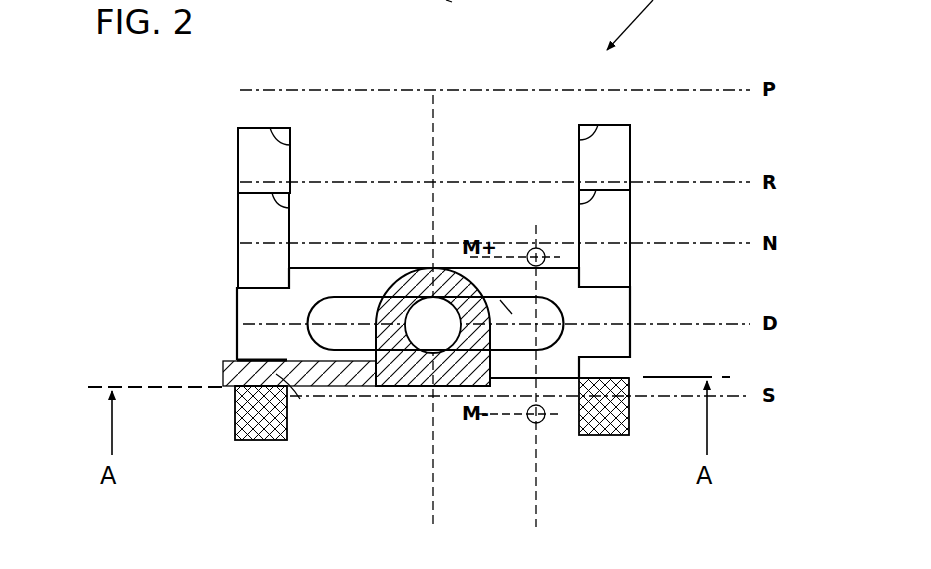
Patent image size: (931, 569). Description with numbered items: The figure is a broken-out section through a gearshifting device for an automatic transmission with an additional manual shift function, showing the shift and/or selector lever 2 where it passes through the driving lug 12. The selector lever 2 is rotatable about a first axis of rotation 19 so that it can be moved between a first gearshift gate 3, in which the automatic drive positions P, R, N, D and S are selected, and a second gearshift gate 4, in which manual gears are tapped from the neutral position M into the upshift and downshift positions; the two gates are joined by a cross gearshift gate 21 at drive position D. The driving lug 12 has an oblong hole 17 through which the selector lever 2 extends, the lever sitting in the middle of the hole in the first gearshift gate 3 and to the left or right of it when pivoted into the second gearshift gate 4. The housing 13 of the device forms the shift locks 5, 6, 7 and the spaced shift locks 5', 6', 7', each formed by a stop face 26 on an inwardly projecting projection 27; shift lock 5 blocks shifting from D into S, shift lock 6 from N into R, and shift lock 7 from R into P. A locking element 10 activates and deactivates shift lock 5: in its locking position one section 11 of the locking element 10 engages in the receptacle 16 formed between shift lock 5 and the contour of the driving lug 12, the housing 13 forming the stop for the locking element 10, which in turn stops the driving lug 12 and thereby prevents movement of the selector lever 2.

The shift and/or selector lever 2 is at (382, 383).
The first gearshift gate 3 is at (428, 502).
The second gearshift gate 4 is at (533, 498).
The shift lock 5 is at (215, 415).
The shift lock 5' is at (642, 360).
The shift lock 6 is at (229, 240).
The shift lock 6' is at (652, 216).
The shift lock 7 is at (228, 141).
The shift lock 7' is at (645, 140).
The locking element 10 is at (432, 354).
The section of the locking element 11 is at (265, 357).
The driving lug 12 is at (258, 305).
The housing 13 is at (248, 440).
The receptacle 16 is at (235, 373).
The oblong hole 17 is at (508, 310).
The first axis of rotation 19 is at (452, 2).
The cross gearshift gate 21 is at (513, 327).
The stop face 26 is at (290, 145).
The projection 27 is at (236, 270).